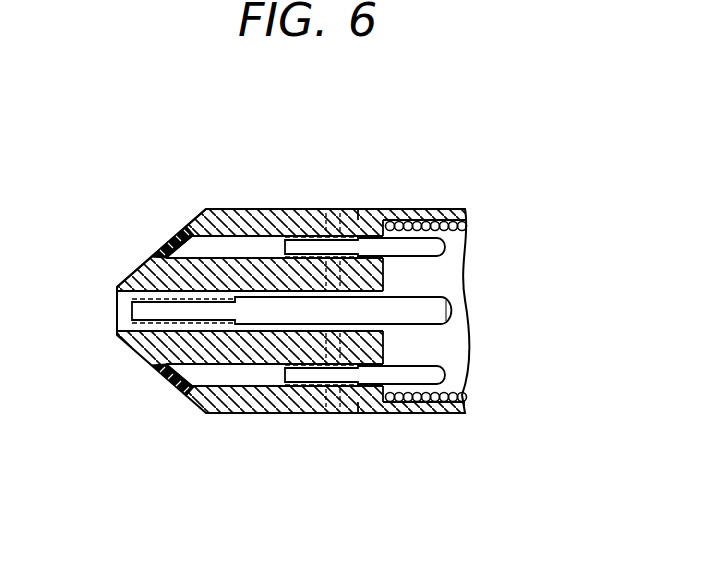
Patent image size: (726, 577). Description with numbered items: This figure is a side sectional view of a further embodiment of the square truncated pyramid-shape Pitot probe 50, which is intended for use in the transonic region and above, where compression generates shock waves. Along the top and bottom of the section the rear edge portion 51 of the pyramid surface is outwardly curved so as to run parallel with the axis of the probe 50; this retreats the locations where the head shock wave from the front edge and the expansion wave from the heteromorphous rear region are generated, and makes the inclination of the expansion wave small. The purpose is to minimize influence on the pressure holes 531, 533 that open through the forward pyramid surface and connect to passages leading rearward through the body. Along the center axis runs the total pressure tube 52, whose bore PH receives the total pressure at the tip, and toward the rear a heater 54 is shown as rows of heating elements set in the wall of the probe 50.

The probe 50 is at (312, 209).
The rear edge portion 51 is at (201, 209).
The pressure hole 531 is at (156, 247).
The pressure hole 533 is at (182, 396).
The total pressure tube 52 is at (132, 308).
The central bore (pressure chamber) PH is at (124, 317).
The heater 54 is at (467, 224).